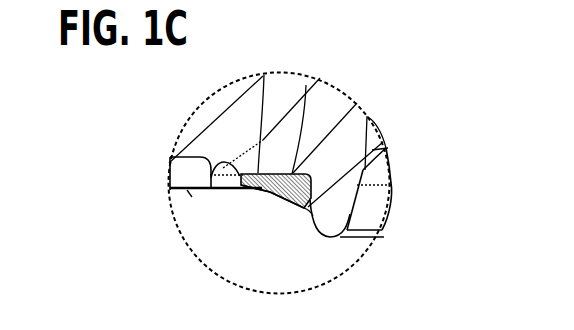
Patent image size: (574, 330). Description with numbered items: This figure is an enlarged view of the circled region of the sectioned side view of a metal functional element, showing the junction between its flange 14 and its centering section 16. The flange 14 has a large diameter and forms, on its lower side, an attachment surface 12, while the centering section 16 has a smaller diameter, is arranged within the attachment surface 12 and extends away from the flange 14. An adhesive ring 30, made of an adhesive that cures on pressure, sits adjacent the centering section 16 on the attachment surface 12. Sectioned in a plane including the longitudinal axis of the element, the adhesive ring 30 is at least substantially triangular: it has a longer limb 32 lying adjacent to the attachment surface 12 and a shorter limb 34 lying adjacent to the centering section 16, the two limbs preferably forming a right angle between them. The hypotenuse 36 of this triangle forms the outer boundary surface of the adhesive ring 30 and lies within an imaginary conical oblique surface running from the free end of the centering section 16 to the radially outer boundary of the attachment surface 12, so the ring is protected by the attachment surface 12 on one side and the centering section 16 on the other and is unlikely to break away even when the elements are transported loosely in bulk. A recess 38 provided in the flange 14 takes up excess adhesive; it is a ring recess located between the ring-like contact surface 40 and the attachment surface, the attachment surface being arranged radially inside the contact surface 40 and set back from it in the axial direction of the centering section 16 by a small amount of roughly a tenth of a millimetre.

The attachment surface 12 is at (264, 75).
The flange 14 is at (213, 125).
The centering section 16 is at (322, 217).
The adhesive ring 30 is at (284, 194).
The longer limb 32 is at (306, 85).
The shorter limb 34 is at (386, 160).
The hypotenuse 36 is at (262, 190).
The recess 38 is at (173, 160).
The contact surface 40 is at (175, 191).